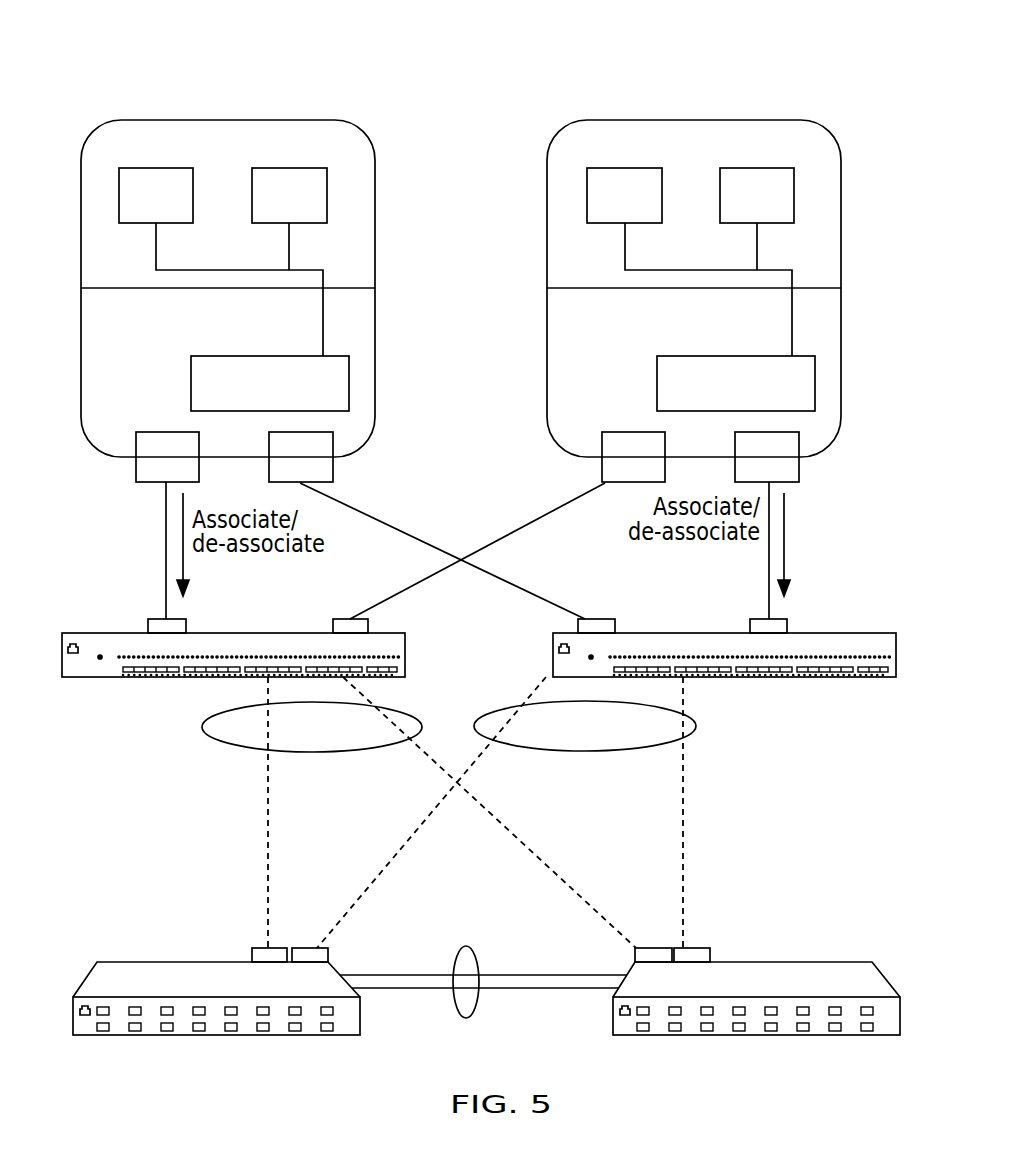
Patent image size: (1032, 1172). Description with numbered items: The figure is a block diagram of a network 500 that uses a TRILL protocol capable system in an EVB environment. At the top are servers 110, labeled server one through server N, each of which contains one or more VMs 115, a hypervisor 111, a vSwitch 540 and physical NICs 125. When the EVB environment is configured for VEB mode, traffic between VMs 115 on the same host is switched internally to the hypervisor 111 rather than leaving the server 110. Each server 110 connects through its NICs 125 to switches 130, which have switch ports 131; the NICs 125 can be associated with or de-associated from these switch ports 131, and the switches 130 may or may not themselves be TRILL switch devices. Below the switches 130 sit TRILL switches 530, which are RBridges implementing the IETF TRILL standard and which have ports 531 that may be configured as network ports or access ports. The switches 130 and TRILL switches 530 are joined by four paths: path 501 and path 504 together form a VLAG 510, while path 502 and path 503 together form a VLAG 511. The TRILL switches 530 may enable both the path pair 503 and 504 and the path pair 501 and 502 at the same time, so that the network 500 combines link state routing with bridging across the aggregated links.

The network 500 is at (788, 36).
The server 110 is at (233, 120).
The VM 115 is at (157, 168).
The hypervisor 111 is at (173, 333).
The vSwitch 540 is at (350, 385).
The physical NIC 125 is at (333, 463).
The switch 130 is at (258, 633).
The switch port 131 is at (157, 619).
The VLAG 510 is at (417, 718).
The VLAG 511 is at (695, 725).
The path 501 is at (267, 813).
The path 502 is at (377, 872).
The path 503 is at (685, 837).
The path 504 is at (538, 863).
The TRILL switch 530 is at (135, 962).
The port 531 is at (257, 948).